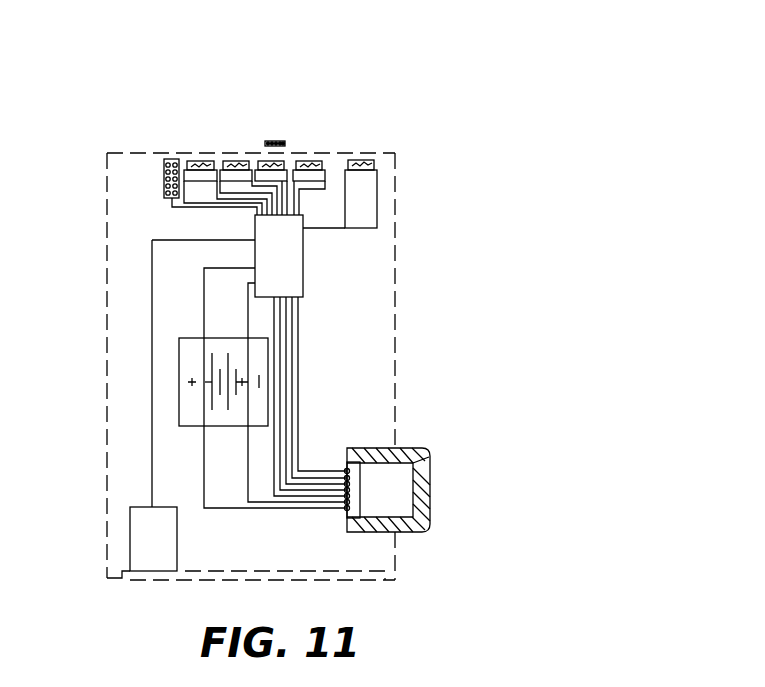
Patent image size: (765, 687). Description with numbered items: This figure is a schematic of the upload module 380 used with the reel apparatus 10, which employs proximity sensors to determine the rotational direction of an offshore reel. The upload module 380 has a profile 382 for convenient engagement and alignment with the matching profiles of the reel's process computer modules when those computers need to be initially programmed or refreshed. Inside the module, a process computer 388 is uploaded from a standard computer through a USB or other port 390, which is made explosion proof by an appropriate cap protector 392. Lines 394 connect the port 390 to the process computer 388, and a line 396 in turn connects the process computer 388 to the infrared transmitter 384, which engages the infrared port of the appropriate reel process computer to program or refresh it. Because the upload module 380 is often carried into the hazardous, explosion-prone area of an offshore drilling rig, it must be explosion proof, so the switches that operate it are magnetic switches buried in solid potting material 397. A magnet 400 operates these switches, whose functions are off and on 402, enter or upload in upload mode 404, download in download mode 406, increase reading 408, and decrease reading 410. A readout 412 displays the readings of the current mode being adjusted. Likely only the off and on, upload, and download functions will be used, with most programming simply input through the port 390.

The reel apparatus 10 is at (615, 69).
The upload module 380 is at (418, 307).
The profile 382 is at (108, 577).
The infrared transmitter 384 is at (130, 536).
The process computer 388 is at (303, 250).
The USB or other port 390 is at (363, 485).
The cap protector 392 is at (430, 515).
The lines 394 is at (298, 396).
The line 396 is at (153, 420).
The solid potting material 397 is at (368, 344).
The magnet 400 is at (273, 141).
The off and on switch 402 is at (358, 160).
The upload switch 404 is at (312, 161).
The download switch 406 is at (267, 161).
The increase reading switch 408 is at (234, 161).
The decrease reading switch 410 is at (200, 161).
The readout 412 is at (168, 159).